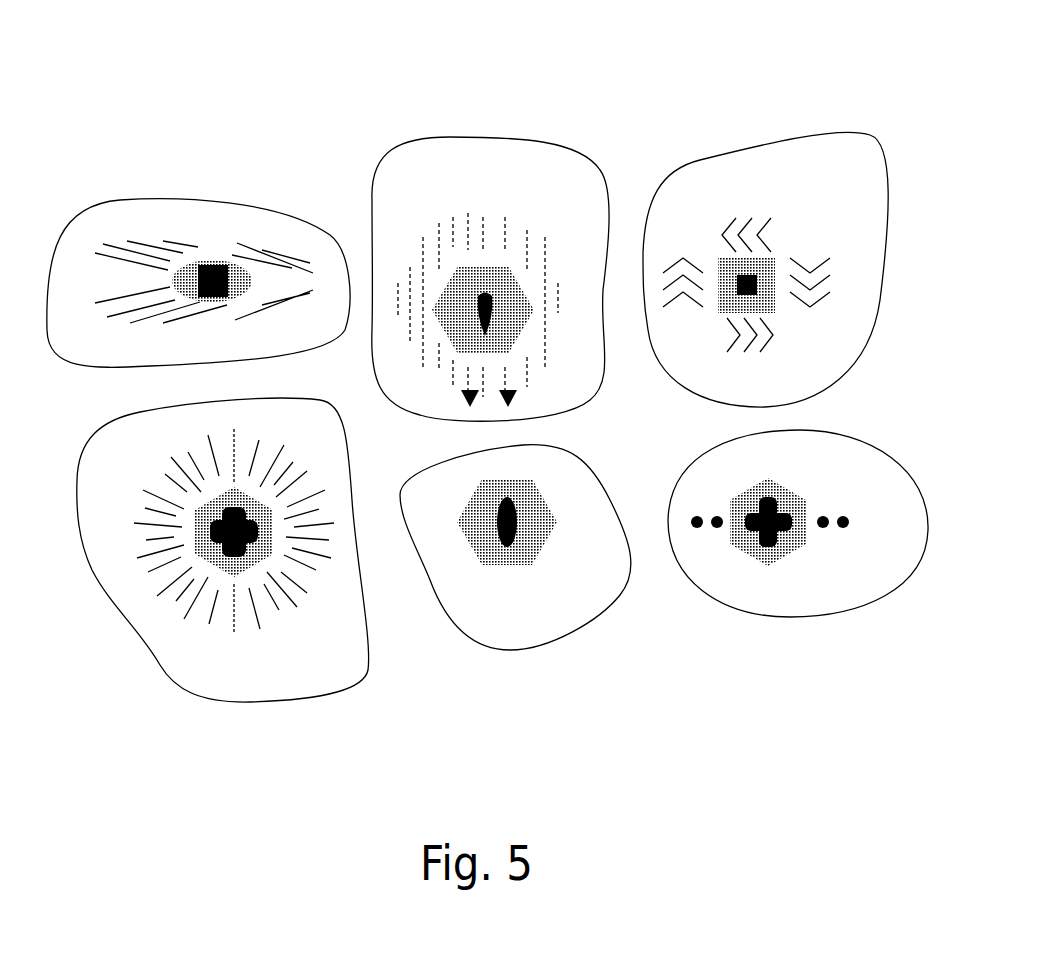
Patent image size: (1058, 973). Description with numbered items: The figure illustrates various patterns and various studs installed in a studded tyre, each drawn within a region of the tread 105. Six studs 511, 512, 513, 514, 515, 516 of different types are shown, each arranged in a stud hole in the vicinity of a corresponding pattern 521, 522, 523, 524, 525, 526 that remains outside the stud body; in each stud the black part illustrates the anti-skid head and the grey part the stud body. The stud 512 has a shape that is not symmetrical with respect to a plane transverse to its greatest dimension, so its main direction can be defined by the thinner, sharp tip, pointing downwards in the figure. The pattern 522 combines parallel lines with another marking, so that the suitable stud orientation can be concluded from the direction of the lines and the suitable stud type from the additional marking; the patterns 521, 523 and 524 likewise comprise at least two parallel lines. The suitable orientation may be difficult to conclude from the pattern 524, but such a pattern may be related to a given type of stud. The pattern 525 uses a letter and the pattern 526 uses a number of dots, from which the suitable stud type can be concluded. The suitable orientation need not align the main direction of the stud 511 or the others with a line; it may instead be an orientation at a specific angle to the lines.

The tread 105 is at (77, 277).
The stud 511 is at (208, 277).
The pattern 521 is at (220, 253).
The stud 512 is at (483, 293).
The pattern 522 is at (517, 237).
The stud 513 is at (730, 268).
The pattern 523 is at (810, 268).
The stud 514 is at (228, 560).
The pattern 524 is at (273, 590).
The stud 515 is at (490, 545).
The pattern 525 is at (533, 600).
The stud 516 is at (745, 545).
The pattern 526 is at (840, 545).